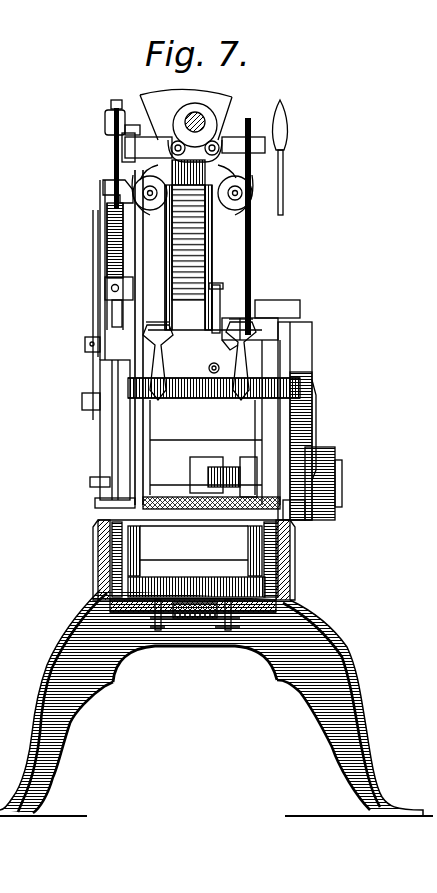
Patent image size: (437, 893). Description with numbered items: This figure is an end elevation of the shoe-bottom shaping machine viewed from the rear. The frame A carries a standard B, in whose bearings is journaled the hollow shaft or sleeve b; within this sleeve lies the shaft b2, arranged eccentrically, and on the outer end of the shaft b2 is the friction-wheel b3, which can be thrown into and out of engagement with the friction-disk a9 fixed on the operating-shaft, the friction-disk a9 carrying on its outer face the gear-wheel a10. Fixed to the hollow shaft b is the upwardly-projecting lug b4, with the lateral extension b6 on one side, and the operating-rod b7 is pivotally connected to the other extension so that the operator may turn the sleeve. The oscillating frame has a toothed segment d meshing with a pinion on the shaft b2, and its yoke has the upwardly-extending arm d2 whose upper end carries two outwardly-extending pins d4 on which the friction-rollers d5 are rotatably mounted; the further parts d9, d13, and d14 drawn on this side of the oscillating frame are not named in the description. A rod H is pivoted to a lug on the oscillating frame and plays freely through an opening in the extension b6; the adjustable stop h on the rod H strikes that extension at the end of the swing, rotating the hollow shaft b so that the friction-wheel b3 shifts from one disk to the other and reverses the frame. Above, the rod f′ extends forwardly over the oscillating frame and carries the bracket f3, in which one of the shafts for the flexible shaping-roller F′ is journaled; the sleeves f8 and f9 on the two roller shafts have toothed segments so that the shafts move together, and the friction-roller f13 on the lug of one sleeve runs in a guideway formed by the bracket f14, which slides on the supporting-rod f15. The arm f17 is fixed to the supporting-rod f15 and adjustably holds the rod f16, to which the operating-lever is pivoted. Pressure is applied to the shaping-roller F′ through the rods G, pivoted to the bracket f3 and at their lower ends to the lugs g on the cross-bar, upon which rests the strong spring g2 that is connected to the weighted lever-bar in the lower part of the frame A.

The frame A is at (216, 668).
The lugs g is at (196, 561).
The strong spring g2 is at (197, 620).
The standard B is at (295, 220).
The rods G is at (147, 420).
The hollow shaft or sleeve b is at (190, 388).
The shaft b2 is at (312, 390).
The friction-wheel b3 is at (293, 333).
The upwardly-projecting lug b4 is at (215, 382).
The lateral extension b6 is at (221, 310).
The operating-rod b7 is at (272, 312).
The friction-disk a9 is at (302, 510).
The gear-wheel a10 is at (333, 497).
The toothed segment d is at (200, 247).
The upwardly-extending arm d2 is at (265, 205).
The outwardly-extending pins d4 is at (252, 150).
The friction-rollers d5 is at (250, 168).
The arm d9 is at (233, 157).
The plate d13 is at (203, 483).
The hook d14 is at (110, 193).
The pin n is at (233, 213).
The flexible shaping-roller F′ is at (188, 108).
The rod f′ is at (148, 105).
The bracket f3 is at (137, 187).
The sleeve f8 is at (228, 112).
The sleeve f9 is at (147, 163).
The friction-roller f13 is at (123, 147).
The bracket f14 is at (115, 113).
The supporting-rod f15 is at (113, 127).
The rod f16 is at (120, 240).
The arm f17 is at (112, 280).
The stop h is at (200, 290).
The rod H is at (195, 308).